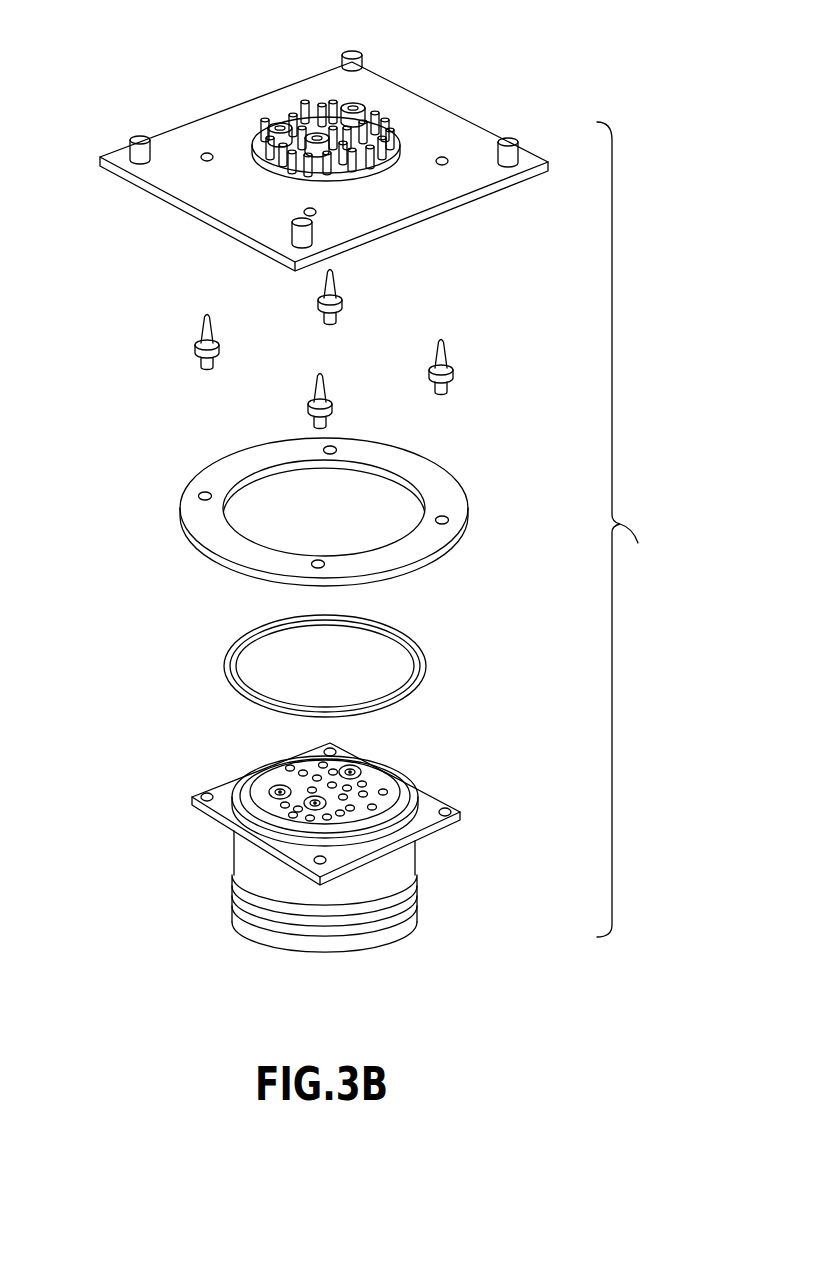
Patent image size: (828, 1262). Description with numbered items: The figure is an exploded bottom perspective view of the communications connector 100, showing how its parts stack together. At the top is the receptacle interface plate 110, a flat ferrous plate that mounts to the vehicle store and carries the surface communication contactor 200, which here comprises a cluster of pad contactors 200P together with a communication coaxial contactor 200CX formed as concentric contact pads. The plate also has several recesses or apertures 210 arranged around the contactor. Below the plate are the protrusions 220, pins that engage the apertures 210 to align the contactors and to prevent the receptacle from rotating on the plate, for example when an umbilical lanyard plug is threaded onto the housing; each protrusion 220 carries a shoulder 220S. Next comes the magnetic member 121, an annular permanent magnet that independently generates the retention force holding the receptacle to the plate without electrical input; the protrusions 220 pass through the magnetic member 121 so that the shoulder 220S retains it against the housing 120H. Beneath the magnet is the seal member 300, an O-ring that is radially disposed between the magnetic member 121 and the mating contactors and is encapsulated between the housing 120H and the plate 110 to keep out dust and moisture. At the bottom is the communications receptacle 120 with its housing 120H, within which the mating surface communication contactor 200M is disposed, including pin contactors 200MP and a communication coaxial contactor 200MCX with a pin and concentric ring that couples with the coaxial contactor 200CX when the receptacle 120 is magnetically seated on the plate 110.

The communications connector 100 is at (632, 529).
The receptacle interface plate 110 is at (517, 188).
The recess or aperture 210 is at (203, 154).
The surface communication contactor 200 is at (340, 97).
The pad contactors 200P is at (279, 112).
The communication coaxial contactor 200CX is at (314, 136).
The protrusion 220 is at (330, 342).
The shoulder 220S is at (454, 372).
The magnetic member 121 is at (452, 478).
The seal member 300 is at (430, 664).
The mating surface communication contactor 200M is at (331, 797).
The pin contactors 200MP is at (278, 788).
The communication coaxial contactor 200MCX is at (358, 769).
The housing 120H is at (401, 863).
The communications receptacle 120 is at (385, 935).